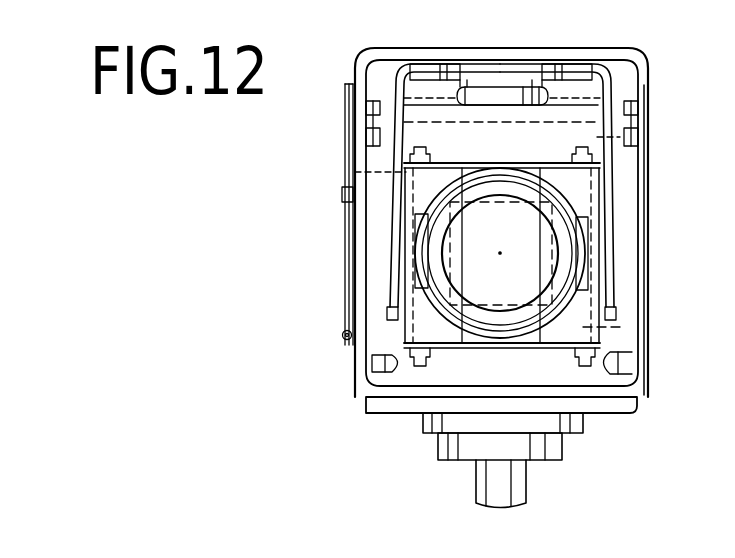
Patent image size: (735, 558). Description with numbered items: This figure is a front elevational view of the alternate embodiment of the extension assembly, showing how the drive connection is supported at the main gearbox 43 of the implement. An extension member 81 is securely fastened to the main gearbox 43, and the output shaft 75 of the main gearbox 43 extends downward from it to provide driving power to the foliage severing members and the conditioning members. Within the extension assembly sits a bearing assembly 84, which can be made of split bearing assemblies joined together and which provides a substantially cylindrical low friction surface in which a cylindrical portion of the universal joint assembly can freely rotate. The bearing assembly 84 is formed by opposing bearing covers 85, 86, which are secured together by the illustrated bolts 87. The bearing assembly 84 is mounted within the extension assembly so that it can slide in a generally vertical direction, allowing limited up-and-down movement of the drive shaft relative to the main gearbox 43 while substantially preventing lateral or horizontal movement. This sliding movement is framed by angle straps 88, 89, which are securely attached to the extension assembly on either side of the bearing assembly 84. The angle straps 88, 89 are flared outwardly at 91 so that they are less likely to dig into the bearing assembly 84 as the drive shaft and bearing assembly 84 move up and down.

The extension member 81 is at (601, 48).
The main gearbox 43 is at (640, 414).
The output shaft 75 is at (494, 477).
The bearing assembly 84 is at (592, 185).
The bearing cover 85 is at (554, 164).
The bearing cover 86 is at (557, 349).
The bolts 87 is at (375, 174).
The angle strap 88 is at (396, 249).
The angle strap 89 is at (604, 228).
The outward flare 91 is at (389, 312).